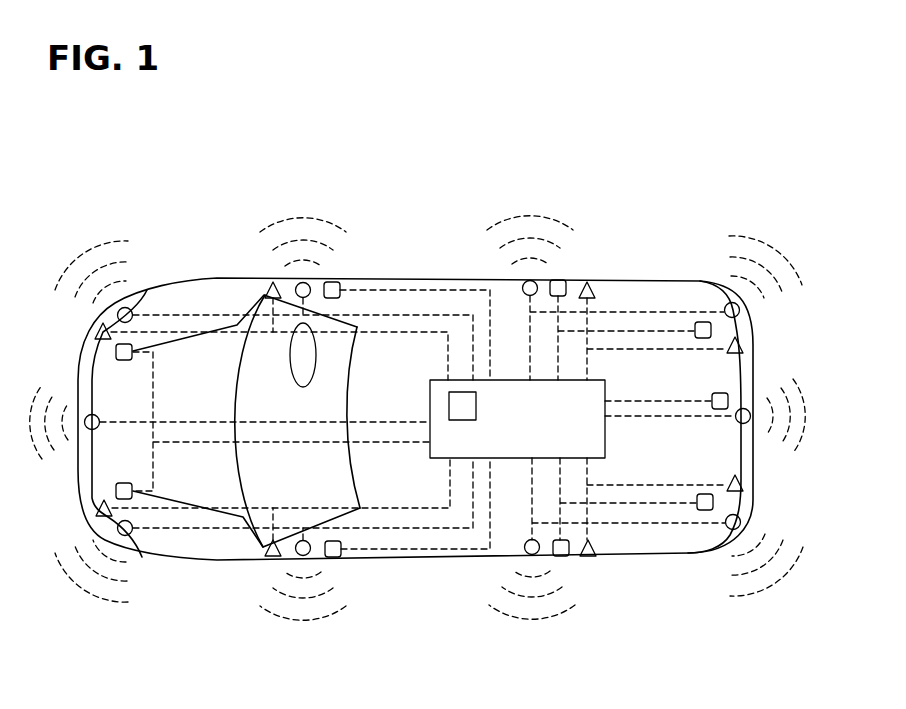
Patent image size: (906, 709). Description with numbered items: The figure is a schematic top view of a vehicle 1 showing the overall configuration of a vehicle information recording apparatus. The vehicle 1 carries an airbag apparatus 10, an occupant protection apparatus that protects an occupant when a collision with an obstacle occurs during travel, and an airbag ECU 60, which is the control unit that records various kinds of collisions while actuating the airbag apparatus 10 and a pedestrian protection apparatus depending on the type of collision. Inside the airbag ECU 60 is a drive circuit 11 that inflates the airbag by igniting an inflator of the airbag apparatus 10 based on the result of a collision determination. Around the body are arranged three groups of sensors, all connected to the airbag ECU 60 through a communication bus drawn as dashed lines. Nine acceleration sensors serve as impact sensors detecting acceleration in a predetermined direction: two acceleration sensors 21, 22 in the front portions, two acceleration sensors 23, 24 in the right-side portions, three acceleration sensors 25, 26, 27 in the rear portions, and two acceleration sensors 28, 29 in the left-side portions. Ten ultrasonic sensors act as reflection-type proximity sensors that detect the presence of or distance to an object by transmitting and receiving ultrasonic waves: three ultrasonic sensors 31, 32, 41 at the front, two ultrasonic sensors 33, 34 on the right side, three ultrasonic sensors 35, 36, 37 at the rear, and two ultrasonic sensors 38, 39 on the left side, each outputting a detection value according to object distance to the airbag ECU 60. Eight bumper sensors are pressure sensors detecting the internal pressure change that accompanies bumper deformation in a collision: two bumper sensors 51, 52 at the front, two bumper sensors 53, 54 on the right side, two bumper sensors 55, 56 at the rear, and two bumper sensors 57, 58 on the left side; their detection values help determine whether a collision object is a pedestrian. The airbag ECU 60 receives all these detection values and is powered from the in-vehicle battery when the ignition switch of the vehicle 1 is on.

The vehicle 1 is at (648, 210).
The airbag apparatus 10 is at (290, 353).
The drive circuit 11 is at (448, 402).
The acceleration sensor 21 is at (116, 490).
The acceleration sensor 22 is at (116, 351).
The acceleration sensor 23 is at (335, 283).
The acceleration sensor 24 is at (560, 281).
The acceleration sensor 25 is at (704, 322).
The acceleration sensor 26 is at (723, 394).
The acceleration sensor 27 is at (705, 511).
The acceleration sensor 28 is at (563, 554).
The acceleration sensor 29 is at (334, 556).
The ultrasonic sensor 31 is at (87, 428).
The ultrasonic sensor 32 is at (128, 308).
The ultrasonic sensor 33 is at (296, 286).
The ultrasonic sensor 34 is at (522, 289).
The ultrasonic sensor 35 is at (728, 303).
The ultrasonic sensor 36 is at (746, 424).
The ultrasonic sensor 37 is at (729, 529).
The ultrasonic sensor 38 is at (524, 548).
The ultrasonic sensor 39 is at (297, 551).
The ultrasonic sensor 41 is at (142, 557).
The bumper sensor 51 is at (117, 529).
The bumper sensor 52 is at (97, 331).
The bumper sensor 53 is at (268, 290).
The bumper sensor 54 is at (591, 287).
The bumper sensor 55 is at (741, 343).
The bumper sensor 56 is at (740, 491).
The bumper sensor 57 is at (590, 556).
The bumper sensor 58 is at (266, 549).
The airbag ECU 60 is at (606, 437).